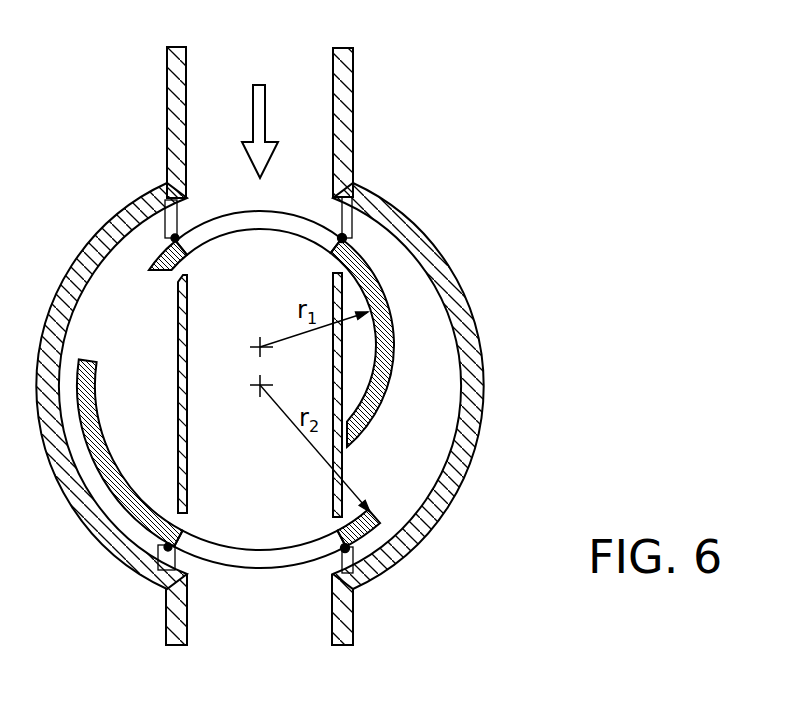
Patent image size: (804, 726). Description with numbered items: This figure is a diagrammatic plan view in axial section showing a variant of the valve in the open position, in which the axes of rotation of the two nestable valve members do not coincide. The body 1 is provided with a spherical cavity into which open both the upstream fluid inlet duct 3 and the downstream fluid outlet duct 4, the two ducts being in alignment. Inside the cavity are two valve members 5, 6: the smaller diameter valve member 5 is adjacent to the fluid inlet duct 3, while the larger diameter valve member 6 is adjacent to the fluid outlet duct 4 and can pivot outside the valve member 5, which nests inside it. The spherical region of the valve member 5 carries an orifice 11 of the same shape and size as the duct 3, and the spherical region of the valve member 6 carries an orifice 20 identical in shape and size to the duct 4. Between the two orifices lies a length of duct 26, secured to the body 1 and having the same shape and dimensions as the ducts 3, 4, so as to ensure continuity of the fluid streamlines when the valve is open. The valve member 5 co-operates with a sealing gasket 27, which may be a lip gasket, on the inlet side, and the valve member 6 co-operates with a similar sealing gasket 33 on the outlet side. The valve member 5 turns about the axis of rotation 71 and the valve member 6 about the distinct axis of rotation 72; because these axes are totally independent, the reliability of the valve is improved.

The body 1 is at (472, 333).
The upstream fluid inlet duct 3 is at (352, 110).
The downstream fluid outlet duct 4 is at (343, 622).
The valve member 5 is at (387, 367).
The valve member 6 is at (374, 506).
The orifice 11 is at (238, 227).
The orifice 20 is at (243, 552).
The length of duct 26 is at (182, 333).
The sealing gasket 27 is at (343, 239).
The sealing gasket 33 is at (348, 547).
The axis of rotation 71 is at (259, 346).
The axis of rotation 72 is at (260, 388).